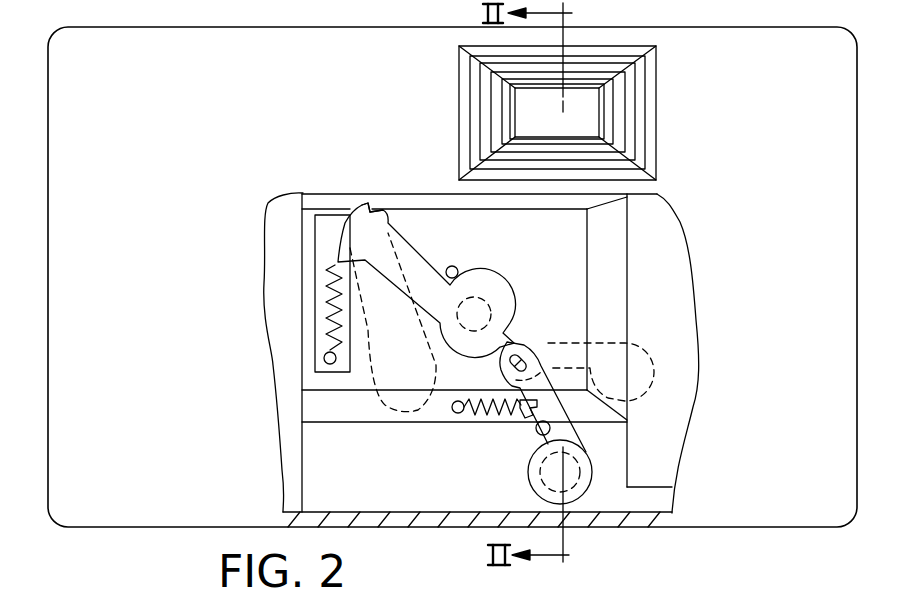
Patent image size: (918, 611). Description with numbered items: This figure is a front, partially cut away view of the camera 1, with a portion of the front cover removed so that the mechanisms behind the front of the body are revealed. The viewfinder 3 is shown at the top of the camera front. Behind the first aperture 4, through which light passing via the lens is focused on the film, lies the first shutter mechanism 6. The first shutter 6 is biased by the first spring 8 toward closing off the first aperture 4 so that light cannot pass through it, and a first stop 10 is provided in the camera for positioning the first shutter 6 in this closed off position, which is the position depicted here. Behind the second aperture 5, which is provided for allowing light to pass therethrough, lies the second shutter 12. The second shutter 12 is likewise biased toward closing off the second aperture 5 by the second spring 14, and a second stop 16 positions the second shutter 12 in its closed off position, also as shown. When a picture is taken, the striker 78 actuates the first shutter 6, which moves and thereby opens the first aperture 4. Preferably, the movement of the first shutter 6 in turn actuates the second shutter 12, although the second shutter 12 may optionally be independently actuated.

The camera 1 is at (72, 210).
The viewfinder 3 is at (583, 97).
The first aperture 4 is at (495, 289).
The second aperture 5 is at (586, 458).
The first shutter mechanism 6 is at (407, 258).
The first spring 8 is at (350, 260).
The first stop 10 is at (450, 265).
The second shutter 12 is at (628, 420).
The second spring 14 is at (512, 391).
The second stop 16 is at (537, 431).
The striker 78 is at (352, 197).